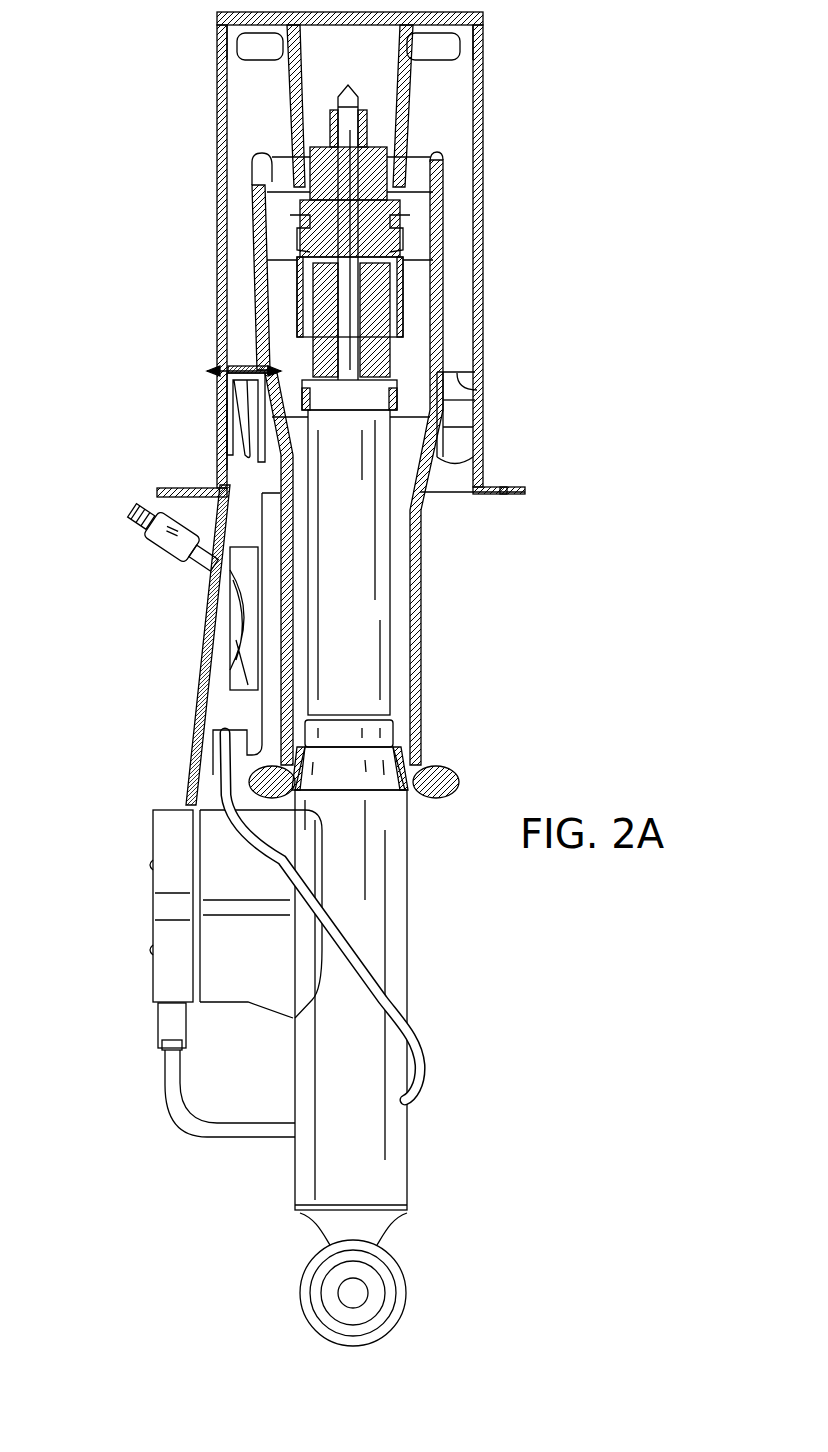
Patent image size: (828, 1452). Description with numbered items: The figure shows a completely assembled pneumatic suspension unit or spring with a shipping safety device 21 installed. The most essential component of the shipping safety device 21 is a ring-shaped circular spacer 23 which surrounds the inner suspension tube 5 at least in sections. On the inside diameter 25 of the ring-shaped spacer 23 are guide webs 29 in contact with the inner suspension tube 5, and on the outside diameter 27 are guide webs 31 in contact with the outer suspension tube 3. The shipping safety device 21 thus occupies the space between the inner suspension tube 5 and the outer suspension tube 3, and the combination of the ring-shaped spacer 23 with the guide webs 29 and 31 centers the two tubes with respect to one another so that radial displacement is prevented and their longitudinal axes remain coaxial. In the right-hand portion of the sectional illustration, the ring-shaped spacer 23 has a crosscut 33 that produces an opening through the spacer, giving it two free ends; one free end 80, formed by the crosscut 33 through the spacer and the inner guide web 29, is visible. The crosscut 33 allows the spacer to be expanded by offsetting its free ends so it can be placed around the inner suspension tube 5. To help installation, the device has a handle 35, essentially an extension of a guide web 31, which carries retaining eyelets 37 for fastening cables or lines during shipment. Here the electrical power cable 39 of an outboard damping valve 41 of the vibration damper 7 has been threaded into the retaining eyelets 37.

The outer suspension tube 3 is at (484, 220).
The inner suspension tube 5 is at (421, 628).
The vibration damper 7 is at (412, 934).
The shipping safety device 21 is at (168, 581).
The ring-shaped circular spacer 23 is at (232, 398).
The inside diameter 25 is at (262, 327).
The outside diameter 27 is at (212, 371).
The guide webs 29 is at (484, 470).
The guide webs 31 is at (215, 433).
The crosscut 33 is at (478, 386).
The handle 35 is at (203, 692).
The retaining eyelets 37 is at (232, 648).
The electrical power cable 39 is at (227, 767).
The outboard damping valve 41 is at (162, 880).
The free end 80 is at (440, 427).